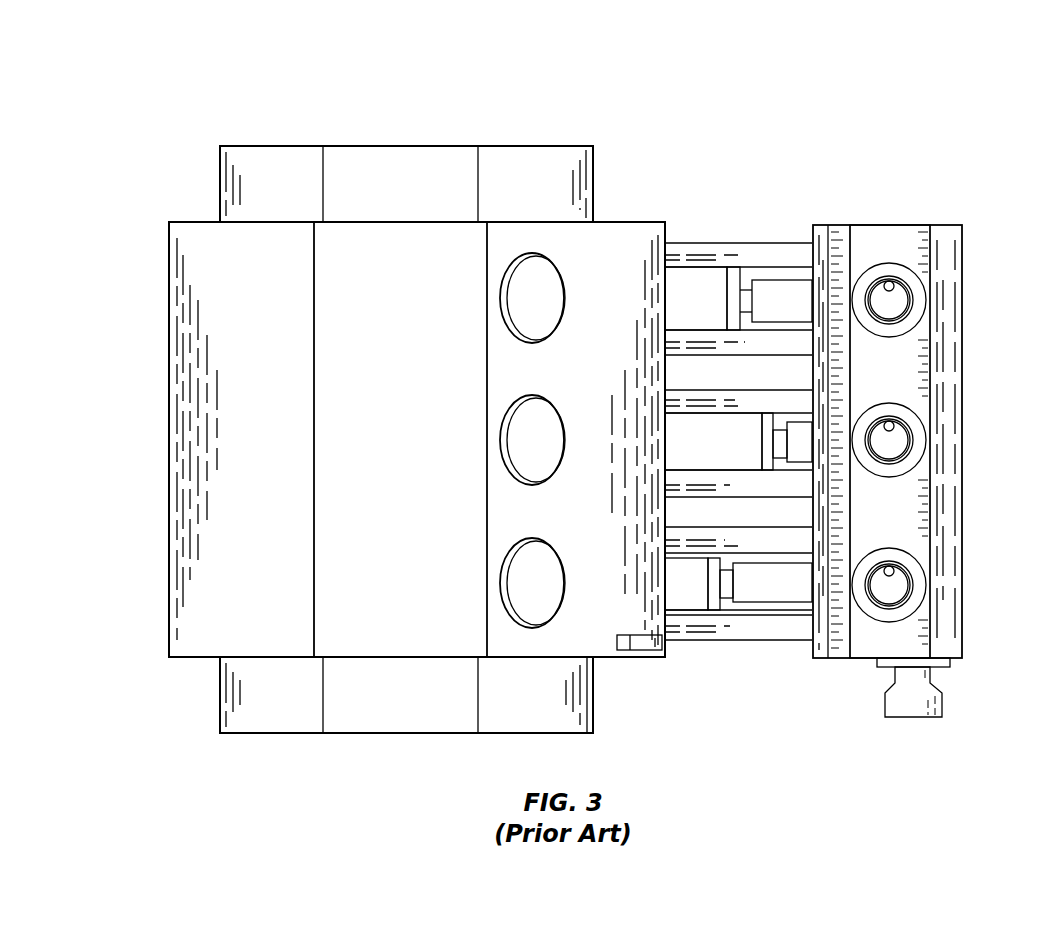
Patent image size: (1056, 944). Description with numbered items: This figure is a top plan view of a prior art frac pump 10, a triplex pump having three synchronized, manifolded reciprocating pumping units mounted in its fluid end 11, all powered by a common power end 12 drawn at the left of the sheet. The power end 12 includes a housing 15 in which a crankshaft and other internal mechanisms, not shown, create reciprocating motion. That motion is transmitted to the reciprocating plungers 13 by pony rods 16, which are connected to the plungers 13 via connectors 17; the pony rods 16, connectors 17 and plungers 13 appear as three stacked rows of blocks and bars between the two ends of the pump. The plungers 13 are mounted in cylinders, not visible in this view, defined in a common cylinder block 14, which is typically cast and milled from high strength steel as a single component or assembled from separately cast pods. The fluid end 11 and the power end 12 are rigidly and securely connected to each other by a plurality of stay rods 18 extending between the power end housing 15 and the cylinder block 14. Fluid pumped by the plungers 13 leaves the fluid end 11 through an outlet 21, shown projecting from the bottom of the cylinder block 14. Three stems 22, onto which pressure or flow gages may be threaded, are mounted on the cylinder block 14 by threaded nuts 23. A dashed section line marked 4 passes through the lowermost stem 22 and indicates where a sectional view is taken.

The frac pump 10 is at (110, 98).
The fluid end 11 is at (964, 382).
The power end 12 is at (168, 452).
The plunger 13 is at (748, 655).
The cylinder block 14 is at (868, 645).
The housing 15 is at (600, 645).
The pony rod 16 is at (713, 438).
The connector 17 is at (734, 272).
The stay rod 18 is at (777, 252).
The outlet 21 is at (905, 707).
The stem 22 is at (886, 283).
The threaded nut 23 is at (918, 300).
The section line 4 is at (1028, 585).